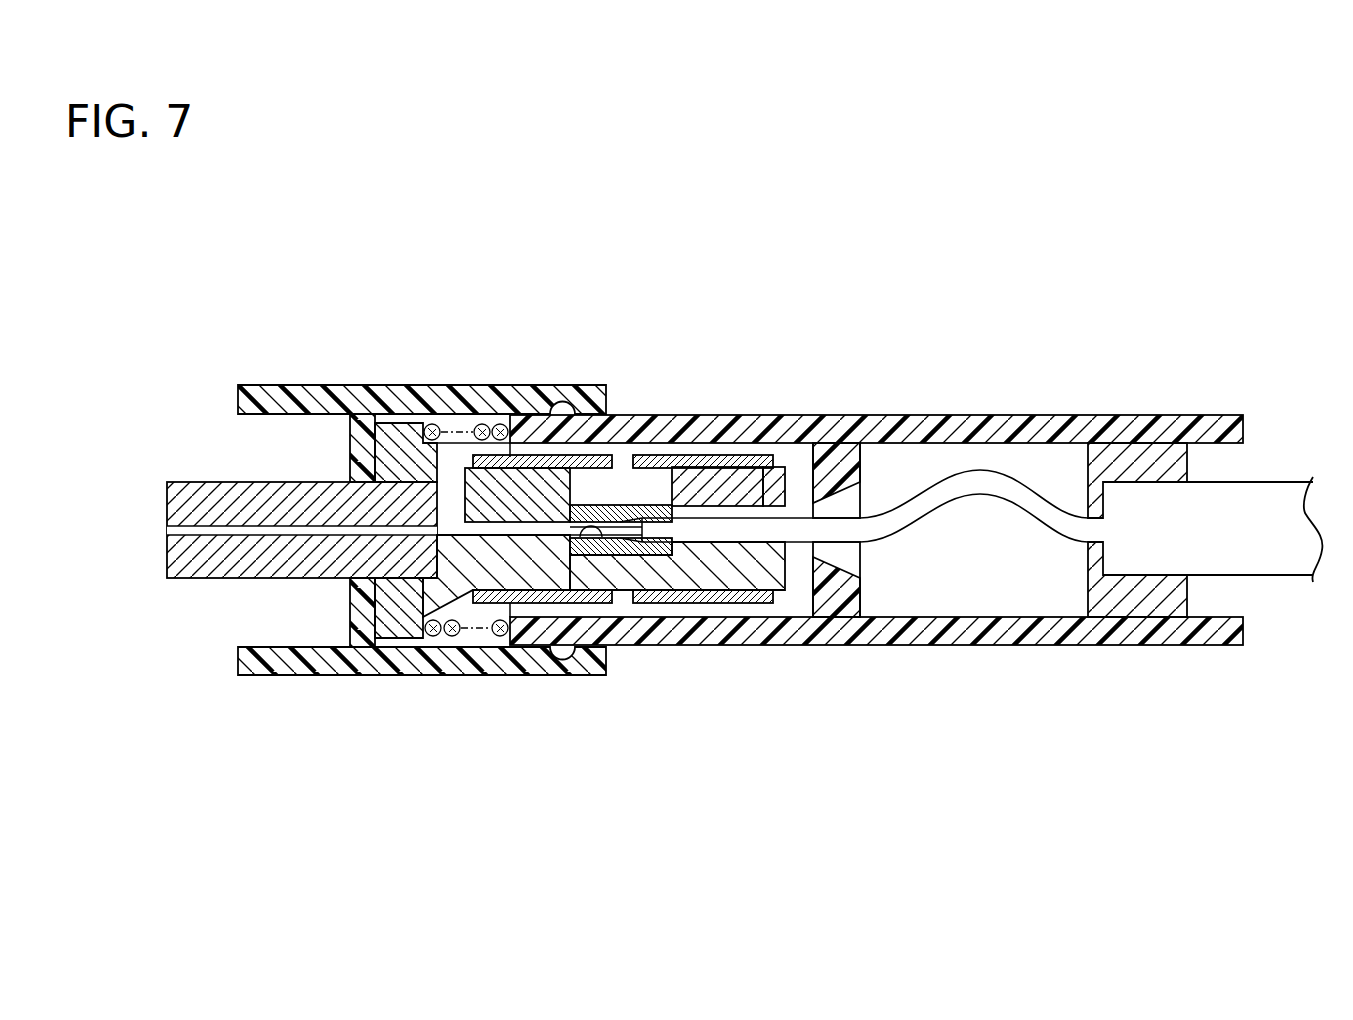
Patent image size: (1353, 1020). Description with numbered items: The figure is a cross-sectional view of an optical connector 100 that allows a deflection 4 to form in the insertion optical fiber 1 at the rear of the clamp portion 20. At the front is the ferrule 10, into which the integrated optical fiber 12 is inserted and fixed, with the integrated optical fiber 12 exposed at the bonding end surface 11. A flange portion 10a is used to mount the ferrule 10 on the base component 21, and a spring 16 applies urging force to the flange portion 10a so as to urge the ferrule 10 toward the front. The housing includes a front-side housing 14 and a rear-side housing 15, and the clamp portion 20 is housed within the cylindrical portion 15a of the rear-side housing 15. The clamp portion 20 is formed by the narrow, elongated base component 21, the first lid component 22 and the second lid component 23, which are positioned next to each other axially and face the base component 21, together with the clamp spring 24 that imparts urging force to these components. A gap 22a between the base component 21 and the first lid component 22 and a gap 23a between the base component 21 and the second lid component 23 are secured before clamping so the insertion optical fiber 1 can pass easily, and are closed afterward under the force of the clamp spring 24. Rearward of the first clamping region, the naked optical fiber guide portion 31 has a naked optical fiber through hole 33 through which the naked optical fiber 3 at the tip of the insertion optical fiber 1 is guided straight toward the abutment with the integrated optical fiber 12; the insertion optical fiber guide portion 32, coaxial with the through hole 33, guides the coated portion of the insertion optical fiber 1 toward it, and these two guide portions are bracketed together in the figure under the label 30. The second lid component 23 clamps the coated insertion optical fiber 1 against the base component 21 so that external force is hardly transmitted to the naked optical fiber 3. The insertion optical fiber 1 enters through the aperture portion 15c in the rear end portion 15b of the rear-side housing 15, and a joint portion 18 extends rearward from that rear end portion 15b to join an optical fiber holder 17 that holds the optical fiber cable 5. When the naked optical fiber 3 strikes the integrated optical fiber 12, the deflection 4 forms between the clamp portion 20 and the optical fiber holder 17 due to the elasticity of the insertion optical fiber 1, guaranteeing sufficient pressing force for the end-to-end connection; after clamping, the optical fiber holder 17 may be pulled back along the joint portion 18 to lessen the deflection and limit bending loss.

The insertion optical fiber 1 is at (733, 530).
The naked optical fiber 3 is at (527, 535).
The deflection 4 is at (980, 470).
The optical fiber cable 5 is at (1287, 577).
The ferrule 10 is at (195, 482).
The flange portion 10a is at (398, 441).
The bonding end surface 11 is at (167, 557).
The integrated optical fiber 12 is at (399, 534).
The front-side housing 14 is at (291, 398).
The rear-side housing 15 is at (835, 416).
The cylindrical portion 15a is at (693, 430).
The rear end portion 15b is at (858, 468).
The aperture portion 15c is at (843, 552).
The spring 16 is at (484, 425).
The optical fiber holder 17 is at (1118, 598).
The joint portion 18 is at (1073, 415).
The clamp portion 20 is at (788, 592).
The base component 21 is at (695, 582).
The first lid component 22 is at (535, 488).
The gap 22a is at (502, 518).
The second lid component 23 is at (745, 483).
The gap 23a is at (765, 512).
The clamp spring 24 is at (650, 603).
The splice element 30 is at (673, 264).
The naked optical fiber guide portion 31 is at (587, 505).
The insertion optical fiber guide portion 32 is at (650, 504).
The naked optical fiber through hole 33 is at (603, 533).
The optical connector 100 is at (189, 625).